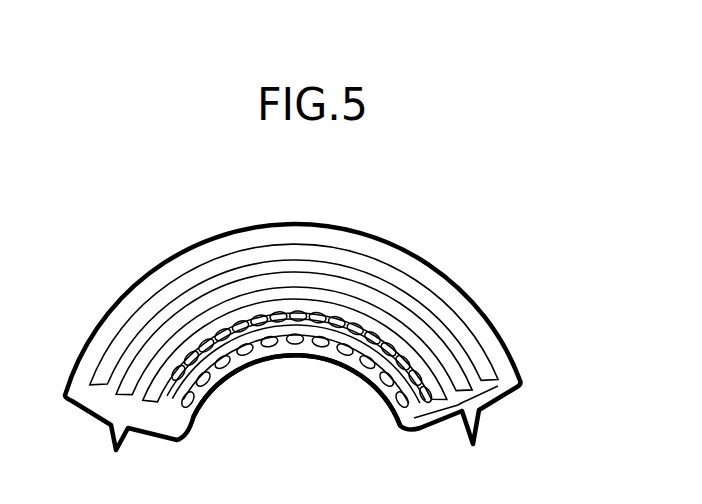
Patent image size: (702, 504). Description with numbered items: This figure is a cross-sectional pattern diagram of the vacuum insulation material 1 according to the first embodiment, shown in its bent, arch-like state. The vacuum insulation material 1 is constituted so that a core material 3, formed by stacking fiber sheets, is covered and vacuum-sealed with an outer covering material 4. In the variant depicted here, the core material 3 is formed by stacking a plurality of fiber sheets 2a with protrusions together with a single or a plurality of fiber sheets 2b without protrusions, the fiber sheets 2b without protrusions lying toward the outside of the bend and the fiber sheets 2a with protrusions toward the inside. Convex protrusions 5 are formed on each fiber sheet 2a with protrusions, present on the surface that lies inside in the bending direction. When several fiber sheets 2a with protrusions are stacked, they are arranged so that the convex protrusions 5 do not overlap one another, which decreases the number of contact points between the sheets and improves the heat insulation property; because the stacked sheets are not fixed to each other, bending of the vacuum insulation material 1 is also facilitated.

The vacuum insulation material 1 is at (101, 193).
The fiber sheet with protrusions 2a is at (190, 377).
The fiber sheet without protrusions 2b is at (199, 277).
The core material 3 is at (479, 415).
The outer covering material 4 is at (499, 334).
The convex protrusion 5 is at (380, 401).